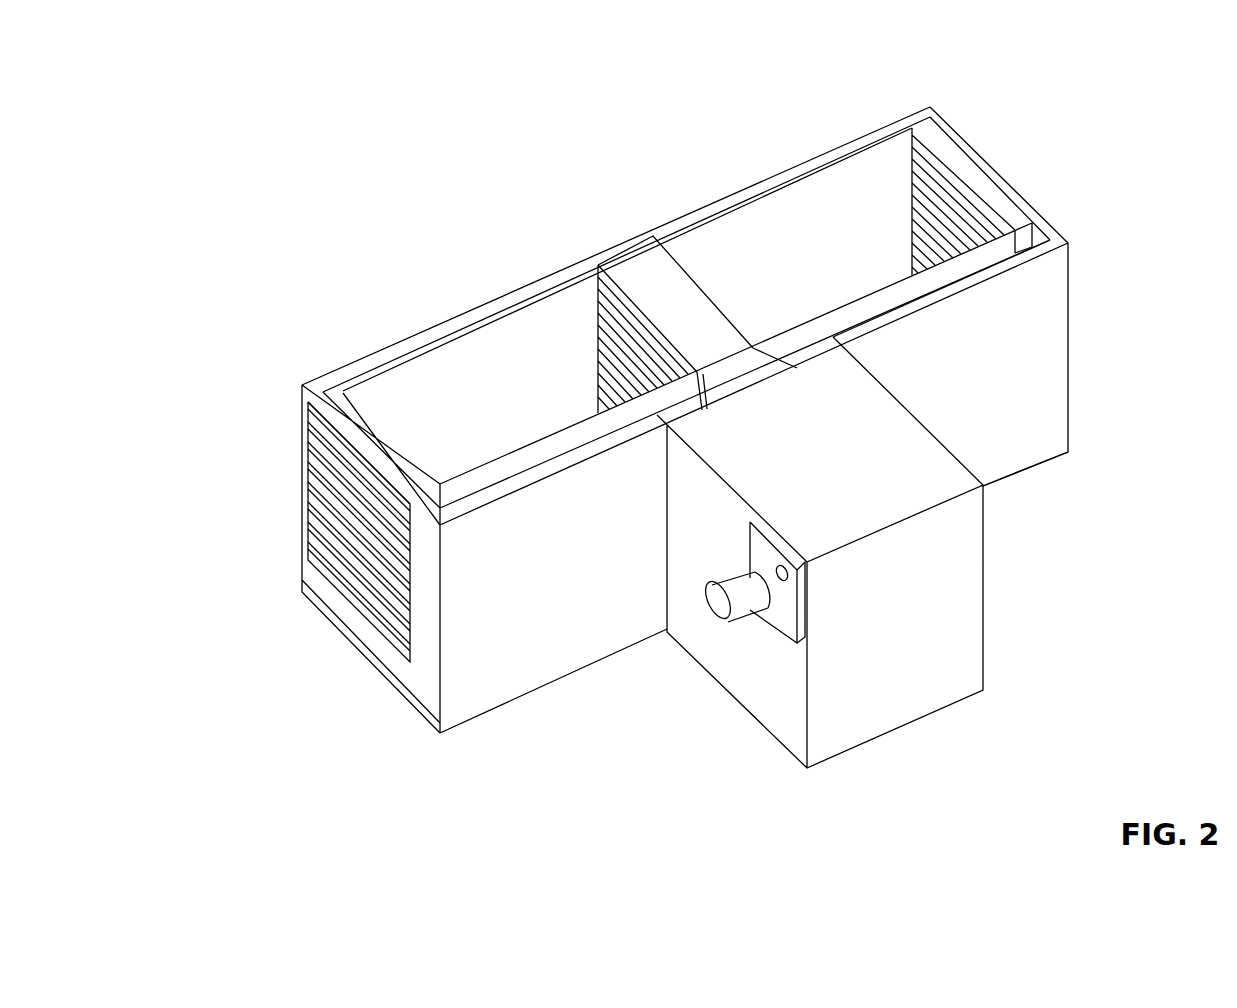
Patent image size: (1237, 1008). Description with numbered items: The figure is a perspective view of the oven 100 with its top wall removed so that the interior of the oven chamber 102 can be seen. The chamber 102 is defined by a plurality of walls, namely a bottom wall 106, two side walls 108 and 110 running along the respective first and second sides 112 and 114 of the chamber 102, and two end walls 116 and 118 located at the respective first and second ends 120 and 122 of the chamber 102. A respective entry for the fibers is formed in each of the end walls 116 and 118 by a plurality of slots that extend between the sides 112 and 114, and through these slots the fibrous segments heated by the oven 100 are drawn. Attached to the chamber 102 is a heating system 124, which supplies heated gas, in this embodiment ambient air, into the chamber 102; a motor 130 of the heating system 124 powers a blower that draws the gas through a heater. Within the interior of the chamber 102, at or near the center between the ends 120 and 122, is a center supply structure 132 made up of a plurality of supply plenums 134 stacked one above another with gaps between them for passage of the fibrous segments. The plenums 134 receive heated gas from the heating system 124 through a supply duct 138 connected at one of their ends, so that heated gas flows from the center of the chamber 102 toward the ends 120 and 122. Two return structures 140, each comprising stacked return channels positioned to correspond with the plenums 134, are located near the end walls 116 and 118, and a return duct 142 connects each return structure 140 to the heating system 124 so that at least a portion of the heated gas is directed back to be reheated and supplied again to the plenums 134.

The oven 100 is at (1176, 790).
The oven chamber 102 is at (816, 184).
The bottom wall 106 is at (1056, 478).
The side wall 108 is at (557, 652).
The side wall 110 is at (380, 343).
The first side 112 is at (521, 723).
The second side 114 is at (432, 294).
The first end wall 116 is at (428, 680).
The second end wall 118 is at (1030, 203).
The first end 120 is at (281, 446).
The second end 122 is at (1039, 146).
The heating system 124 is at (768, 786).
The motor 130 is at (718, 608).
The supply structure 132 is at (715, 282).
The supply plenum 134 is at (651, 272).
The supply duct 138 is at (755, 366).
The return structure 140 is at (942, 150).
The return duct 142 is at (892, 289).